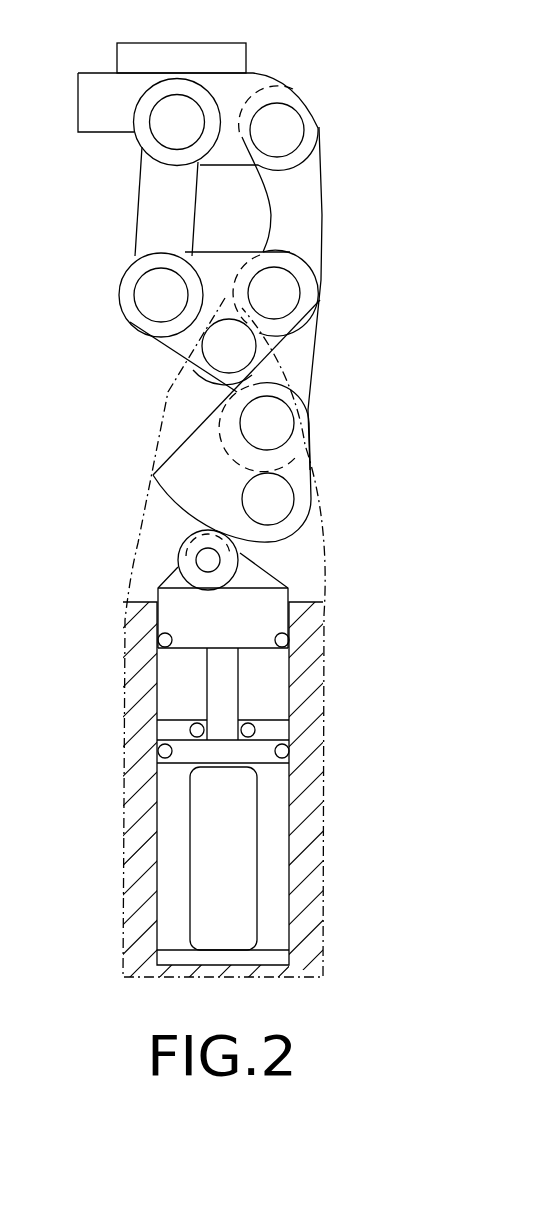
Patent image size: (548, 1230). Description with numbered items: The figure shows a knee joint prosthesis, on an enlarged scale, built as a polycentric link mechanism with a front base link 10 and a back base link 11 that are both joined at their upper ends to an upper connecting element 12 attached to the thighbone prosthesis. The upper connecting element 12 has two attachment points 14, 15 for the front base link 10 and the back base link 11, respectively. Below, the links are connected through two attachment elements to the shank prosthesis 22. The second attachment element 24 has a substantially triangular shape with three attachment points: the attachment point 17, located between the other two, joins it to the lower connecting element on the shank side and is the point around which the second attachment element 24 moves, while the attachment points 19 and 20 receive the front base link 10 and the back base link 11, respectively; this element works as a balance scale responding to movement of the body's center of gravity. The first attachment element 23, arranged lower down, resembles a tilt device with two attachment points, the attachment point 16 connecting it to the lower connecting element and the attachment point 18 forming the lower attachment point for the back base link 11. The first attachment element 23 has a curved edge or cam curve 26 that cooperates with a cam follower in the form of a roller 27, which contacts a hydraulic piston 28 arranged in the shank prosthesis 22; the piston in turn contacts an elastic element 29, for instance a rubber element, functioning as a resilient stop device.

The front base link 10 is at (137, 217).
The back base link 11 is at (327, 208).
The upper connecting element 12 is at (249, 60).
The fulcrum / attachment point 14 is at (163, 140).
The fulcrum / attachment point 15 is at (286, 121).
The attachment point 16 is at (262, 490).
The attachment point 17 is at (223, 350).
The attachment point 18 is at (260, 434).
The attachment point 19 is at (145, 304).
The attachment point 20 is at (284, 302).
The shank prosthesis 22 is at (324, 692).
The first attachment element 23 is at (183, 443).
The second attachment element 24 is at (158, 349).
The cam curve 26 is at (188, 506).
The roller 27 is at (178, 540).
The hydraulic piston 28 is at (188, 617).
The elastic element 29 is at (227, 843).